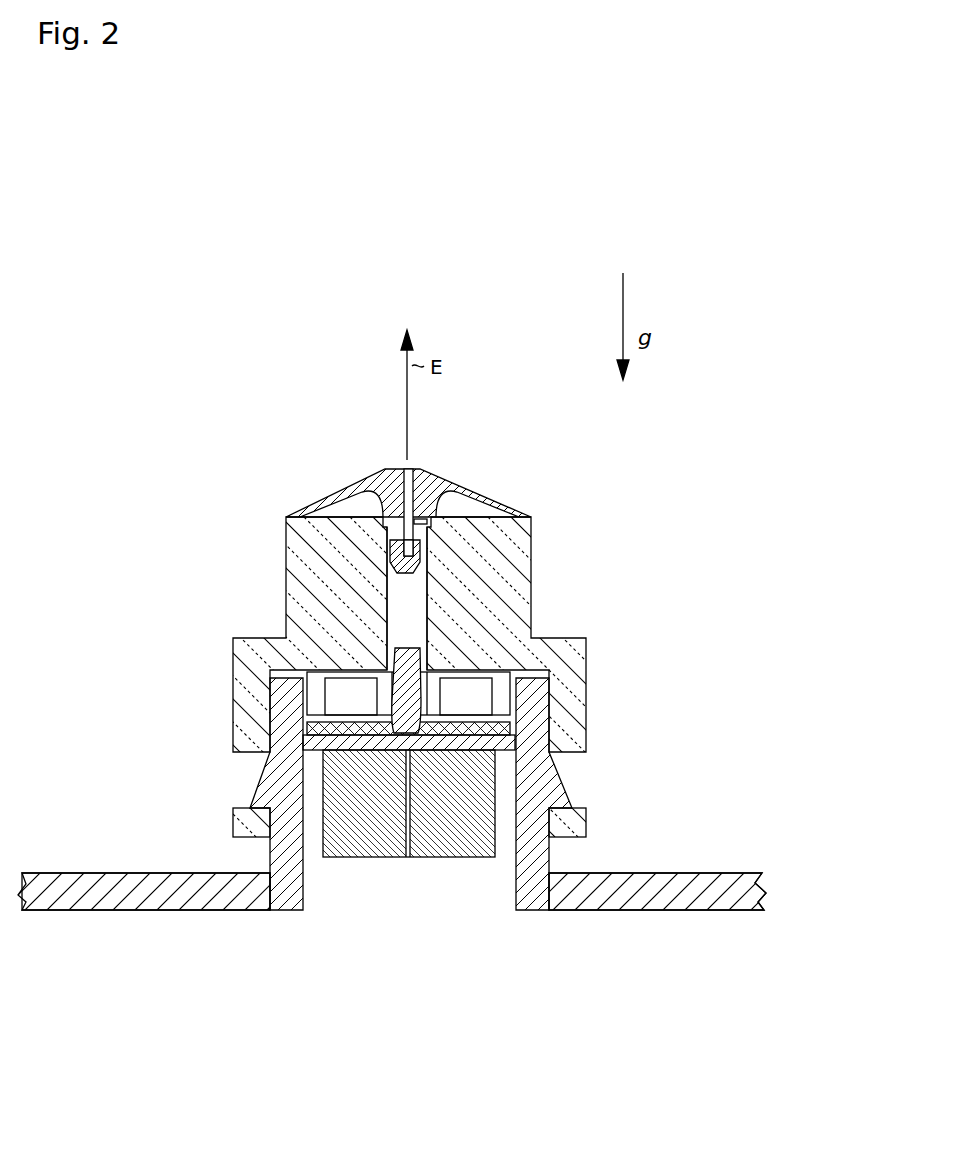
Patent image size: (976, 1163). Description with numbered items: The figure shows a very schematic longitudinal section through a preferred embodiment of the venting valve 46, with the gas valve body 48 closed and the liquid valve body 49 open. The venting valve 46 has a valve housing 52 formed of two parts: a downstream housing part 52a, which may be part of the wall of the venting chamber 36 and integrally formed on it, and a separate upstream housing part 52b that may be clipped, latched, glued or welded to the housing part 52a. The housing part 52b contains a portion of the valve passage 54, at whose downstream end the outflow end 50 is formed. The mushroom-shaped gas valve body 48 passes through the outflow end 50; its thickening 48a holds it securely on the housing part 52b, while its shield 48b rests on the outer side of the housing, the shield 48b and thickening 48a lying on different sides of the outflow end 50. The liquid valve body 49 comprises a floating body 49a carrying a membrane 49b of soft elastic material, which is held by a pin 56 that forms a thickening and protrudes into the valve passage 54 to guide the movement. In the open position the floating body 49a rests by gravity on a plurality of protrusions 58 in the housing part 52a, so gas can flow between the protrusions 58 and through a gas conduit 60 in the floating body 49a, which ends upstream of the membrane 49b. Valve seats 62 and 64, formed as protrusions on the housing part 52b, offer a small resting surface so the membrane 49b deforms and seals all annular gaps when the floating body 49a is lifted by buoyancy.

The venting valve 46 is at (164, 392).
The gas valve body 48 is at (432, 485).
The thickening 48a is at (424, 547).
The shield 48b is at (337, 497).
The liquid valve body 49 is at (406, 864).
The floating body 49a is at (340, 848).
The membrane 49b is at (513, 728).
The outflow end 50 is at (430, 522).
The valve housing 52 is at (185, 684).
The housing part 52a is at (394, 868).
The housing part 52b is at (532, 613).
The venting chamber 36 is at (647, 892).
The valve passage 54 is at (416, 630).
The pin 56 is at (419, 664).
The protrusions 58 is at (516, 765).
The gas conduit 60 is at (411, 842).
The valve seat 62 is at (440, 693).
The valve seat 64 is at (318, 693).